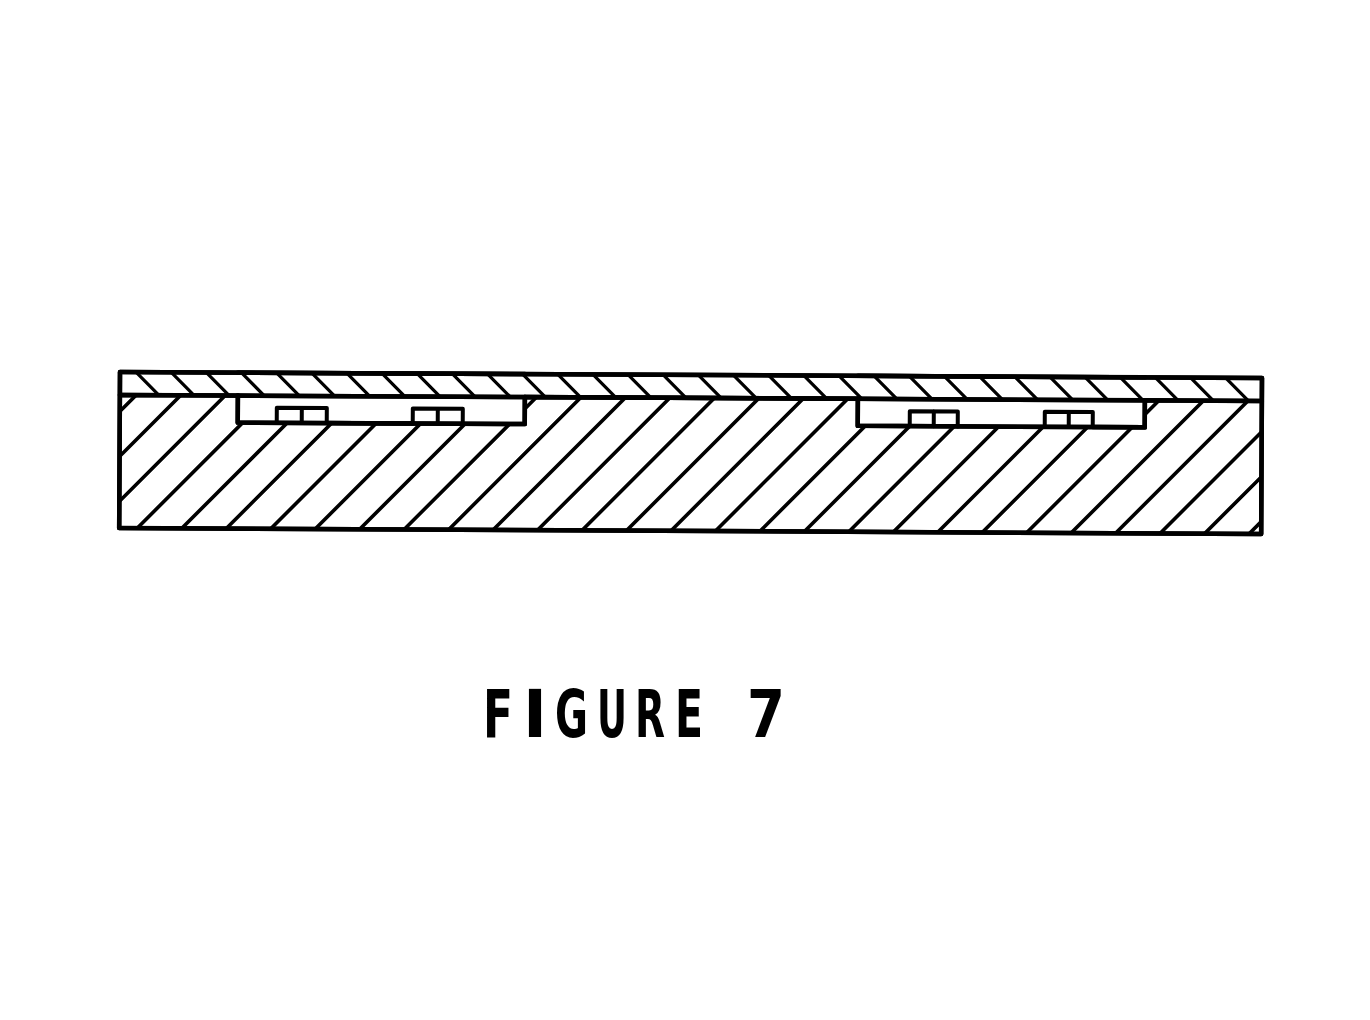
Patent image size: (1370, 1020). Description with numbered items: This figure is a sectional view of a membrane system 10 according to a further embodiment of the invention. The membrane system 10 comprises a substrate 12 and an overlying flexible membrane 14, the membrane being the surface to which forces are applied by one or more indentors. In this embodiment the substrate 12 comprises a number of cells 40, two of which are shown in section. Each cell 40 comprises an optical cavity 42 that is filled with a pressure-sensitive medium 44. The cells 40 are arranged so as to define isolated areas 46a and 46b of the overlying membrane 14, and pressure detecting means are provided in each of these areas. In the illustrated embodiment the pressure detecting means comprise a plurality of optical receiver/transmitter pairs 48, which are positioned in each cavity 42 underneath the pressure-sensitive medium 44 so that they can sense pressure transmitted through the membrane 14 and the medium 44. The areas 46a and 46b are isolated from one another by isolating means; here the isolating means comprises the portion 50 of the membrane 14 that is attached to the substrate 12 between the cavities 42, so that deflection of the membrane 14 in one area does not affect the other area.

The membrane system 10 is at (330, 178).
The substrate 12 is at (1250, 447).
The flexible membrane 14 is at (207, 375).
The cell 40 is at (884, 456).
The optical cavity 42 is at (353, 417).
The pressure-sensitive medium 44 is at (497, 413).
The isolated area of the membrane 46a is at (440, 345).
The isolated area of the membrane 46b is at (994, 355).
The optical receiver/transmitter pairs 48 is at (300, 422).
The portion of membrane 50 is at (723, 398).